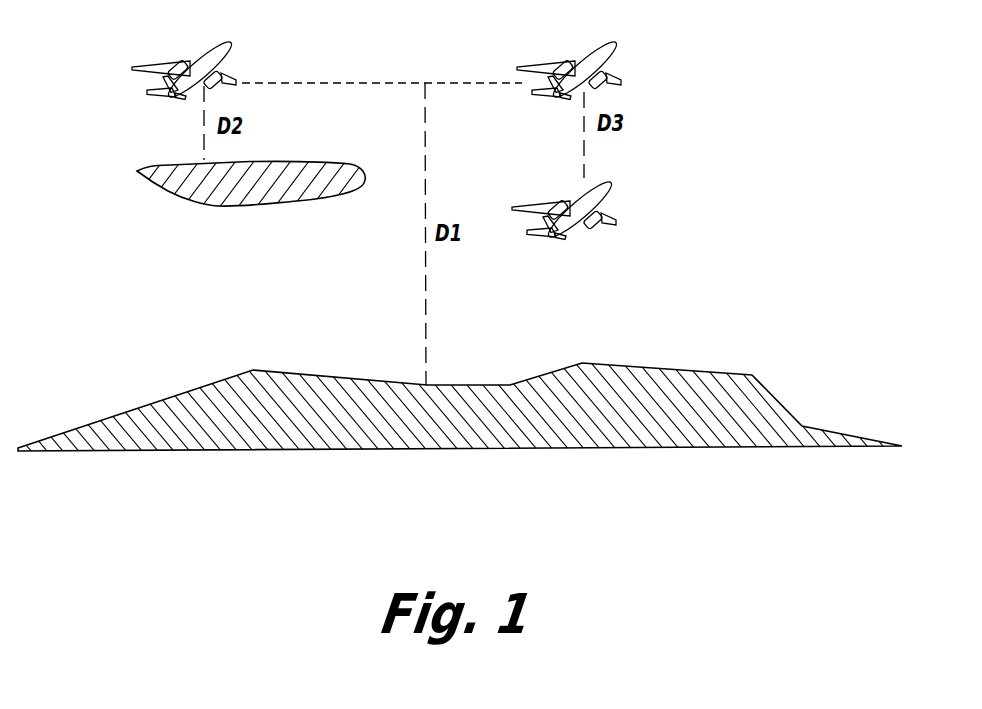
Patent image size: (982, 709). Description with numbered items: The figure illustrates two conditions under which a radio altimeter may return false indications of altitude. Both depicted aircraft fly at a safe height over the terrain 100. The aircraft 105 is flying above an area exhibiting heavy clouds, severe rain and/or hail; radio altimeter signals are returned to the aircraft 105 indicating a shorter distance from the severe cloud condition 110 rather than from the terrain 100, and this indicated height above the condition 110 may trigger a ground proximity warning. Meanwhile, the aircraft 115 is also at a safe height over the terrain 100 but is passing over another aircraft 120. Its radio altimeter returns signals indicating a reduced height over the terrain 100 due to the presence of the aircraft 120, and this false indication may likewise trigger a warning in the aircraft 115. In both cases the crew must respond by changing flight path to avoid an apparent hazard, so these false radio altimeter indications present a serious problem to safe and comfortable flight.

The terrain 100 is at (182, 395).
The aircraft 105 is at (233, 53).
The severe cloud condition 110 is at (198, 203).
The aircraft 115 is at (618, 51).
The aircraft 120 is at (611, 195).